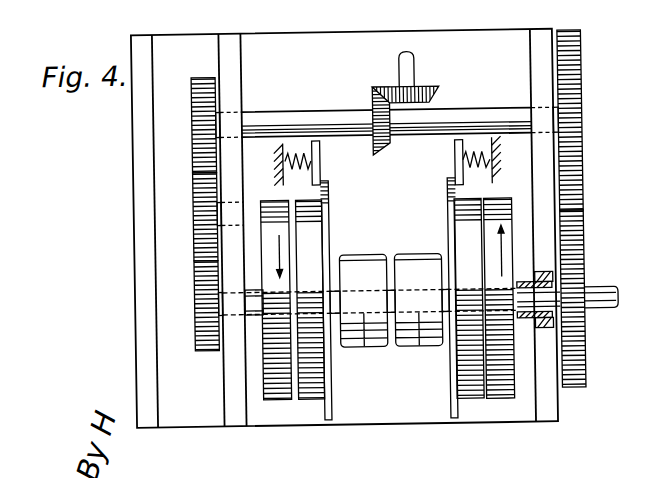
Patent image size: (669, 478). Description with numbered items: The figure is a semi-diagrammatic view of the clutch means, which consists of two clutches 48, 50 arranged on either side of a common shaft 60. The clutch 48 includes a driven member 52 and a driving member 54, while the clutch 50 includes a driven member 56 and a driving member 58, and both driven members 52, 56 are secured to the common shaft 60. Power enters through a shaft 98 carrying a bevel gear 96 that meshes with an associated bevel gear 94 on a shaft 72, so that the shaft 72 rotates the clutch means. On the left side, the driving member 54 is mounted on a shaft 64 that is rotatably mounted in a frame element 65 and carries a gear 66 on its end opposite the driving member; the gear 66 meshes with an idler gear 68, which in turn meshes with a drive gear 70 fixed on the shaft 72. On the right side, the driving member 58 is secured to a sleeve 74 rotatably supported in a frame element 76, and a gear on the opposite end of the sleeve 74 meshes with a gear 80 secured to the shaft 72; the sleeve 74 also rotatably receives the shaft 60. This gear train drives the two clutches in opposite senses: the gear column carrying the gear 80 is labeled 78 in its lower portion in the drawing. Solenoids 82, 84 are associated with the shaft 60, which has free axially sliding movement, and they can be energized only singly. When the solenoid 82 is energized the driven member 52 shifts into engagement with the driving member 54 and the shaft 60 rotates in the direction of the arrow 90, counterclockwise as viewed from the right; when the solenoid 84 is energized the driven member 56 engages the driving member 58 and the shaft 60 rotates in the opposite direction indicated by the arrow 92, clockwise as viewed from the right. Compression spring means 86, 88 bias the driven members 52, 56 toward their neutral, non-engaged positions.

The clutch 48 is at (287, 327).
The clutch 50 is at (492, 327).
The driven member 52 is at (286, 413).
The driving member 54 is at (280, 398).
The driven member 56 is at (464, 391).
The driving member 58 is at (484, 407).
The common shaft 60 is at (602, 296).
The shaft 64 is at (257, 315).
The frame element 65 is at (227, 402).
The gear 66 is at (199, 278).
The idler gear 68 is at (193, 209).
The drive gear 70 is at (199, 138).
The shaft 72 is at (282, 110).
The sleeve 74 is at (522, 322).
The frame element 76 is at (544, 413).
The gear 78 is at (577, 255).
The gear 80 is at (585, 66).
The solenoid 82 is at (363, 255).
The solenoid 84 is at (415, 258).
The compression spring means 86 is at (268, 174).
The compression spring means 88 is at (452, 162).
The arrow 90 is at (283, 248).
The arrow 92 is at (490, 251).
The bevel gear 94 is at (375, 98).
The bevel gear 96 is at (432, 86).
The shaft 98 is at (418, 60).